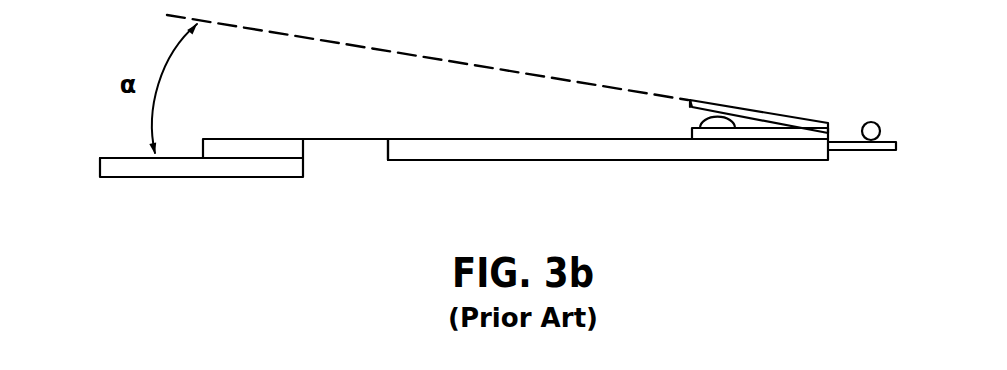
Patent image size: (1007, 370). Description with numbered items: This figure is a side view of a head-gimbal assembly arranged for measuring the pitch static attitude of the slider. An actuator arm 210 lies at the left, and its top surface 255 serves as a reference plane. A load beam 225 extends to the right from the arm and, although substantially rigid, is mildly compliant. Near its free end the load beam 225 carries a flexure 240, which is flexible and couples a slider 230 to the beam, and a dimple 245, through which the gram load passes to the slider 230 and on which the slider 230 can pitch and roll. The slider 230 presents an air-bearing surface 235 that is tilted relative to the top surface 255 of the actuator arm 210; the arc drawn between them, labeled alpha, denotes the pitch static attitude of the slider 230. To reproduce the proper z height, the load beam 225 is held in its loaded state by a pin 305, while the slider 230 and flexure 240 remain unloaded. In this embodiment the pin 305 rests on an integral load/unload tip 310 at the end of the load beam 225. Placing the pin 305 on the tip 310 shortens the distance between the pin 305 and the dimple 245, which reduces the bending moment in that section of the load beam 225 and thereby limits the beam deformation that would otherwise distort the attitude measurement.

The actuator arm 210 is at (222, 182).
The top surface of the actuator arm 255 is at (117, 150).
The load beam 225 is at (573, 168).
The flexure 240 is at (803, 146).
The air-bearing surface 235 is at (742, 102).
The slider 230 is at (771, 97).
The dimple 245 is at (686, 118).
The integral load/unload tip 310 is at (869, 167).
The pin 305 is at (884, 106).